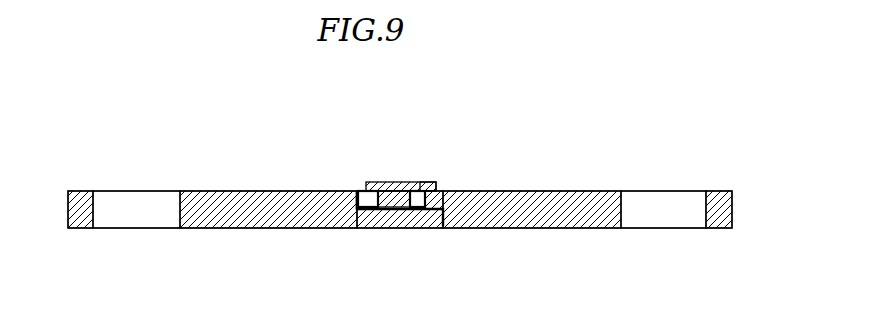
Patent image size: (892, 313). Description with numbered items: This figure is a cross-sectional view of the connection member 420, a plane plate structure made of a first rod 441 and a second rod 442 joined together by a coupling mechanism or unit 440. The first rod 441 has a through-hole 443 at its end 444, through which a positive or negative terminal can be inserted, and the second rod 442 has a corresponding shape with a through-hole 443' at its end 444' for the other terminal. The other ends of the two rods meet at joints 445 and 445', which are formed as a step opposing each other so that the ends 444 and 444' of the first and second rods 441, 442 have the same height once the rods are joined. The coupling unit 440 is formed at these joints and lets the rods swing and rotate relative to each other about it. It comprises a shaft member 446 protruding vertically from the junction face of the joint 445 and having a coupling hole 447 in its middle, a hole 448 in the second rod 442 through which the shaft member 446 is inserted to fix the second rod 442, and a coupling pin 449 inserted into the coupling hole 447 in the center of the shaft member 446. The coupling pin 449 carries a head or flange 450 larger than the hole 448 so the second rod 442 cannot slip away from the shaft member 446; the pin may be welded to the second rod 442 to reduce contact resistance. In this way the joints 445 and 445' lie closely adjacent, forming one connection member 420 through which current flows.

The connection member 420 is at (163, 105).
The coupling mechanism or unit 440 is at (380, 258).
The first rod 441 is at (270, 197).
The second rod 442 is at (512, 214).
The through-hole 443 is at (136, 234).
The through-hole 443' is at (663, 232).
The end 444 is at (77, 187).
The end 444' is at (716, 186).
The joint 445 is at (451, 235).
The joint 445' is at (337, 171).
The shaft member 446 is at (427, 189).
The coupling hole 447 is at (398, 205).
The hole 448 is at (362, 209).
The coupling pin 449 is at (404, 207).
The head or flange 450 is at (378, 183).